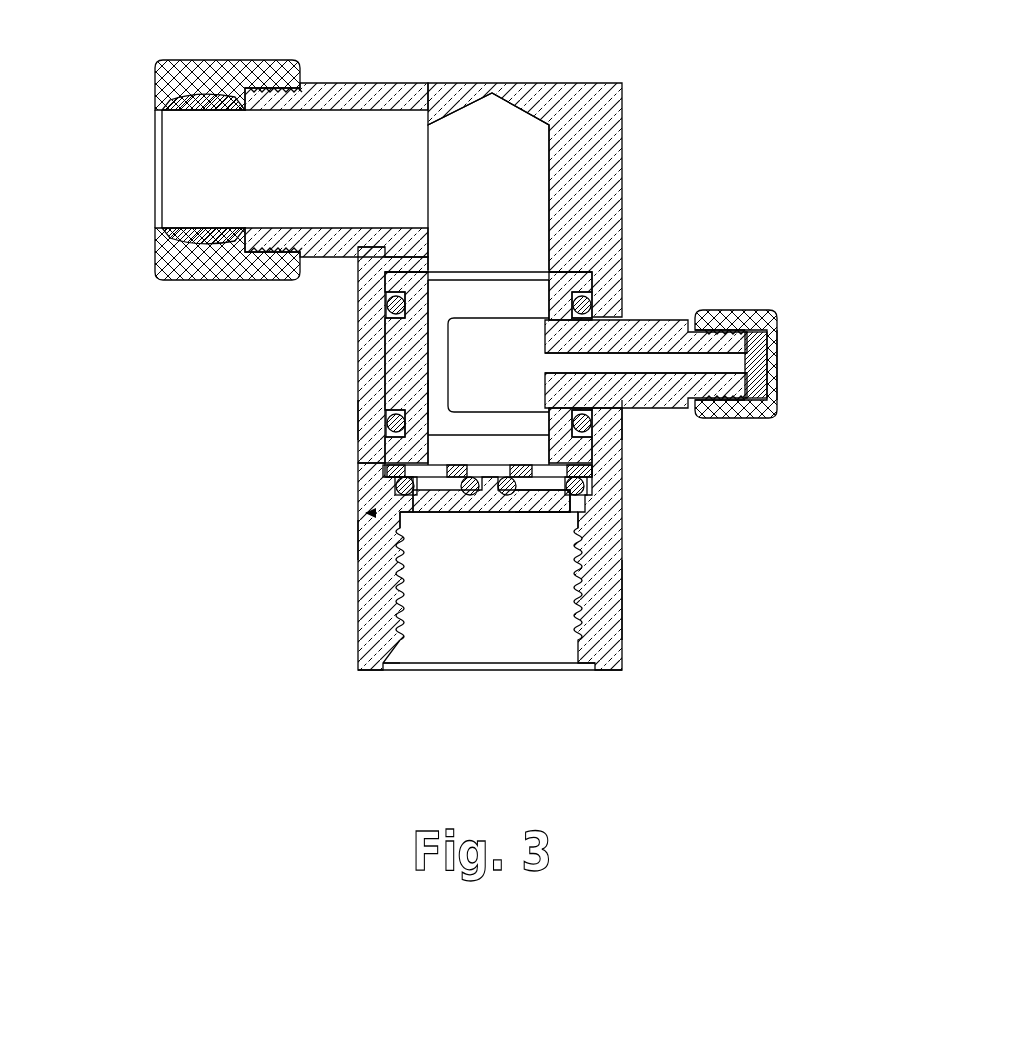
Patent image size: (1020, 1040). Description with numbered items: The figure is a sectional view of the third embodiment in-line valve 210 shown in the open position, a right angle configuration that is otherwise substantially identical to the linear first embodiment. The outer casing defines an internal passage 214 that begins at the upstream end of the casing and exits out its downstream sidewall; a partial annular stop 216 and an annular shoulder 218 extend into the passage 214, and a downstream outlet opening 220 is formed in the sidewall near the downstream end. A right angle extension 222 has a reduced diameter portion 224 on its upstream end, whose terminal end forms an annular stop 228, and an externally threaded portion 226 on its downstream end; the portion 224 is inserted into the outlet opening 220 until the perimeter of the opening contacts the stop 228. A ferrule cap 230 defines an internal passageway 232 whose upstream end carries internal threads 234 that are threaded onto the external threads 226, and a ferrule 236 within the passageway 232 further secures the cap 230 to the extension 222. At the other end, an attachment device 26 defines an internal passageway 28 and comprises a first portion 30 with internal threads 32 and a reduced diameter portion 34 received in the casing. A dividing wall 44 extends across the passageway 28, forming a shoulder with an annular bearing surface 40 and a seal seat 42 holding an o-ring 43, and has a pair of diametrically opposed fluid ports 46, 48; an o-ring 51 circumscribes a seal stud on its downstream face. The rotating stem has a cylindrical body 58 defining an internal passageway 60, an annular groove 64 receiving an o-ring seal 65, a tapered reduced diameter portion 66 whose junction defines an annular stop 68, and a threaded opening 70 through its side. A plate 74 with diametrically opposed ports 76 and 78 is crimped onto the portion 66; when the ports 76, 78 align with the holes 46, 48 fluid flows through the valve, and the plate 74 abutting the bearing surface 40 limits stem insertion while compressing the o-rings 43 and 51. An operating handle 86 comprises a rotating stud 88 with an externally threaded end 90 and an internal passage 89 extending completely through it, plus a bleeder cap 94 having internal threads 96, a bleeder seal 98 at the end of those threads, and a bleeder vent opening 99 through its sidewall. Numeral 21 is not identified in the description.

The O-ring seal 21 is at (592, 303).
The attachment device 26 is at (628, 606).
The internal passageway 28 is at (500, 640).
The first portion 30 is at (358, 628).
The internal threads 32 is at (388, 643).
The reduced diameter portion 34 is at (360, 542).
The annular bearing surface 40 is at (600, 468).
The seal seat 42 is at (588, 490).
The o-ring 43 is at (598, 500).
The dividing wall 44 is at (480, 493).
The fluid port 46 is at (527, 513).
The fluid port 48 is at (440, 513).
The o-ring 51 is at (443, 493).
The cylindrical body 58 is at (392, 345).
The internal passageway 60 is at (460, 420).
The annular groove 64 is at (398, 410).
The o-ring seal 65 is at (386, 426).
The reduced diameter portion 66 is at (370, 508).
The annular stop 68 is at (392, 476).
The threaded opening 70 is at (546, 335).
The plate 74 is at (557, 493).
The port 76 is at (548, 472).
The port 78 is at (427, 472).
The operating handle 86 is at (782, 419).
The rotating stud 88 is at (678, 408).
The internal passage 89 is at (700, 370).
The externally threaded end 90 is at (550, 407).
The bleeder cap 94 is at (778, 383).
The internal threads 96 is at (770, 312).
The bleeder seal 98 is at (778, 330).
The bleeder vent opening 99 is at (745, 418).
The third embodiment in-line valve 210 is at (712, 101).
The internal passage 214 is at (495, 194).
The partial annular stop 216 is at (378, 421).
The annular shoulder 218 is at (385, 262).
The downstream outlet opening 220 is at (417, 92).
The right angle extension 222 is at (352, 80).
The reduced diameter portion 224 is at (378, 230).
The externally threaded portion 226 is at (250, 262).
The annular stop 228 is at (357, 262).
The ferrule cap 230 is at (217, 255).
The internal passageway 232 is at (205, 190).
The internal threads 234 is at (258, 88).
The ferrule 236 is at (190, 112).